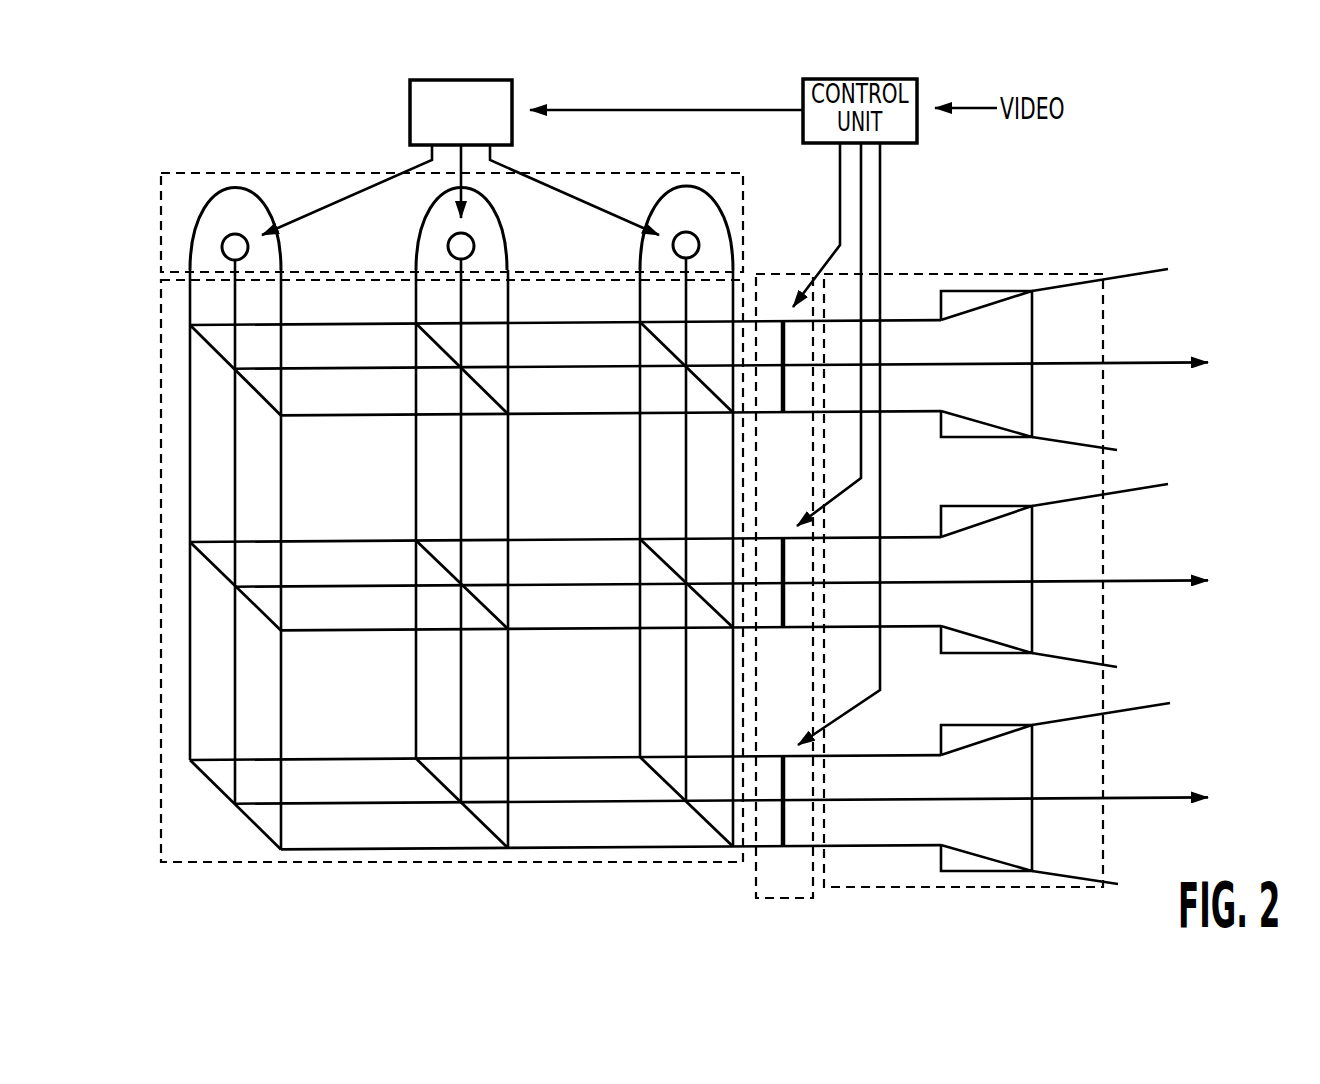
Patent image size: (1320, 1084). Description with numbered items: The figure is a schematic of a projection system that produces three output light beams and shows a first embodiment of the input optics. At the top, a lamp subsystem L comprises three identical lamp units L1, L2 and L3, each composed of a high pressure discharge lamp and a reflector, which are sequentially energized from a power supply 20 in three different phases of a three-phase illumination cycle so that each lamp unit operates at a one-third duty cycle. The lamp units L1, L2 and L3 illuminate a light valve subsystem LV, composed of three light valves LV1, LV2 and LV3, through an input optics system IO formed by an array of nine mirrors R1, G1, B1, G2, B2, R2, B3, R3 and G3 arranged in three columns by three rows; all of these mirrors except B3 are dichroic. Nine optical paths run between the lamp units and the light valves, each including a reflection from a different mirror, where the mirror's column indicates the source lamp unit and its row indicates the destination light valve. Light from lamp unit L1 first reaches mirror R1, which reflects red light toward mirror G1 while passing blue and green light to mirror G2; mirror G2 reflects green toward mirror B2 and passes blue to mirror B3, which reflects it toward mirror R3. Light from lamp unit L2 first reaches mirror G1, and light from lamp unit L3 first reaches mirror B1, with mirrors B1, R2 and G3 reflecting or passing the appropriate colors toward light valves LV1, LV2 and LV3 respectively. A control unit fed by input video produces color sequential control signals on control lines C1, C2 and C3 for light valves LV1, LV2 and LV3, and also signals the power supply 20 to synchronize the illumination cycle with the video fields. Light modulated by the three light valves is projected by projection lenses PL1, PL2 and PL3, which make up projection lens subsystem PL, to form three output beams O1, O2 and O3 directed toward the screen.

The power supply 20 is at (410, 88).
The lamp subsystem L is at (176, 208).
The lamp unit L1 is at (239, 200).
The lamp unit L2 is at (463, 229).
The lamp unit L3 is at (689, 200).
The input optics system IO is at (157, 407).
The mirror R1 is at (213, 348).
The mirror G1 is at (432, 339).
The mirror B1 is at (656, 338).
The mirror G2 is at (213, 565).
The mirror B2 is at (432, 556).
The mirror R2 is at (656, 554).
The mirror B3 is at (213, 783).
The mirror R3 is at (479, 821).
The mirror G3 is at (705, 820).
The light valve subsystem LV is at (758, 898).
The light valve LV1 is at (782, 411).
The light valve LV2 is at (782, 627).
The light valve LV3 is at (782, 845).
The control line C1 is at (832, 256).
The control line C2 is at (848, 492).
The control line C3 is at (852, 710).
The projection lens subsystem PL is at (925, 887).
The projection lens PL1 is at (990, 452).
The projection lens PL2 is at (990, 668).
The projection lens PL3 is at (992, 886).
The output beam O1 is at (1158, 272).
The output beam O2 is at (1143, 488).
The output beam O3 is at (1133, 709).